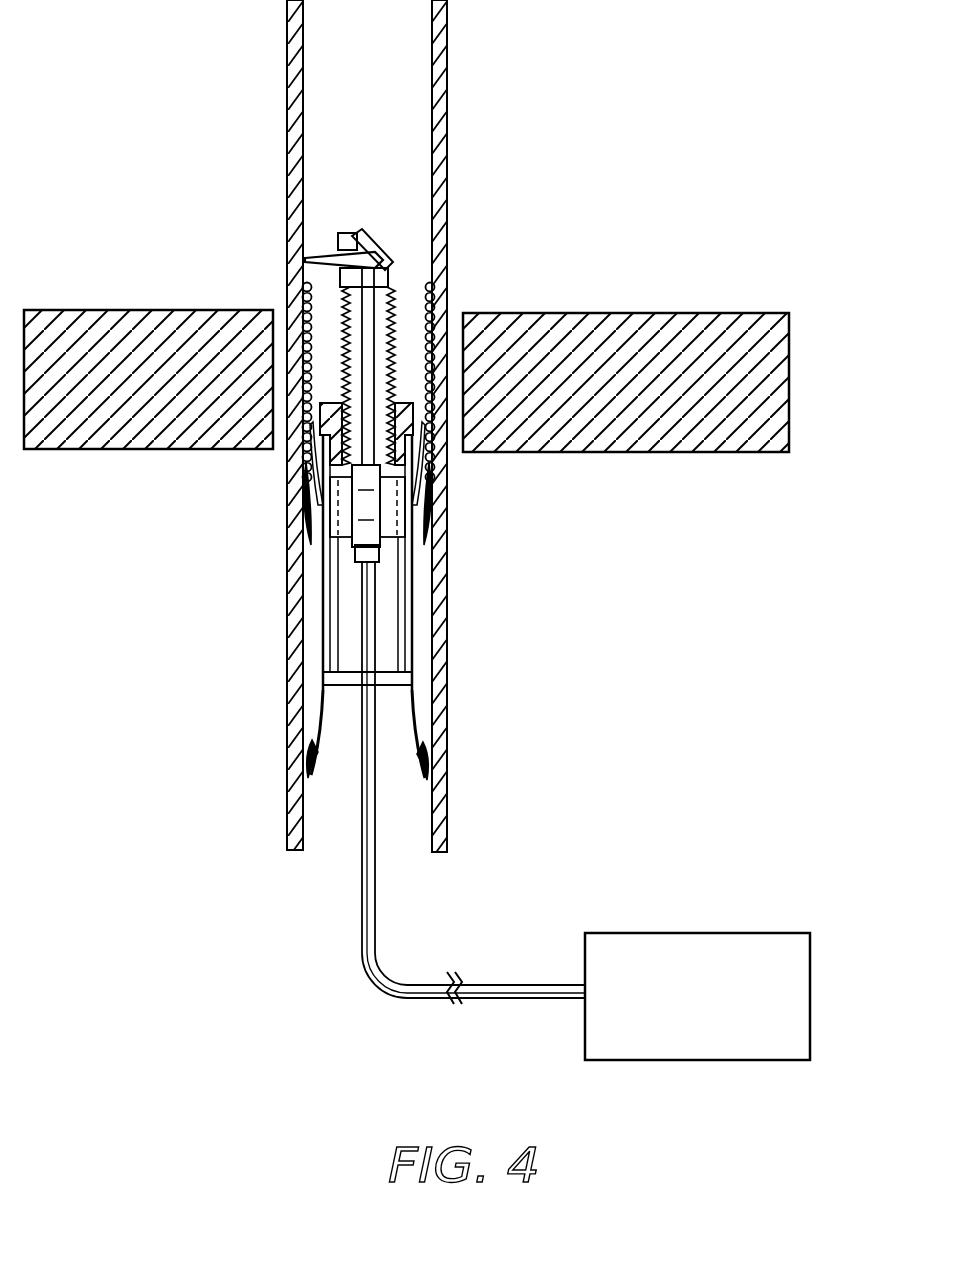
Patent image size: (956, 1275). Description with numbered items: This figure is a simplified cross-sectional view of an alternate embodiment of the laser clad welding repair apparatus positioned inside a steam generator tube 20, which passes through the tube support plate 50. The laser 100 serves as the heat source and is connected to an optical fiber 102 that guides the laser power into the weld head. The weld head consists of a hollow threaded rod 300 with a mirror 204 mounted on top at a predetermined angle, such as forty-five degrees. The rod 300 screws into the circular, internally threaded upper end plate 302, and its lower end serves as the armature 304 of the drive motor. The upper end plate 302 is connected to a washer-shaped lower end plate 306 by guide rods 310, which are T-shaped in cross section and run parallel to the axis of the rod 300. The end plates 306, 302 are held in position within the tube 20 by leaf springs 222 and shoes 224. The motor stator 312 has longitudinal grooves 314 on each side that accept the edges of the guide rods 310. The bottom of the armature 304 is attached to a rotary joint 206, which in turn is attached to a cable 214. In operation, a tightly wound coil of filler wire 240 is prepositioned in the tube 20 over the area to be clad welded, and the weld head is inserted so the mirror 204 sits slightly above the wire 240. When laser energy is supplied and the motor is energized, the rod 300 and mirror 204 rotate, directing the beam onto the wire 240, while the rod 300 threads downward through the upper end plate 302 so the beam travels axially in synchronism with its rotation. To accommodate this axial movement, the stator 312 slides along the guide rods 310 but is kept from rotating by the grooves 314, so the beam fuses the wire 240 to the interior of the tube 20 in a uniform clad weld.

The tube 20 is at (295, 455).
The tube support plate 50 is at (454, 428).
The laser 100 is at (697, 971).
The optical fiber 102 is at (421, 780).
The mirror 204 is at (424, 221).
The rotary joint 206 is at (449, 596).
The cable 214 is at (398, 1023).
The leaf springs 222 is at (427, 726).
The shoes 224 is at (425, 756).
The coil of filler wire 240 is at (313, 367).
The threaded rod 300 is at (441, 352).
The upper end plate 302 is at (301, 460).
The armature 304 is at (447, 533).
The lower end plate 306 is at (301, 685).
The guide rods 310 is at (301, 562).
The stator 312 is at (310, 495).
The longitudinal grooves 314 is at (297, 546).